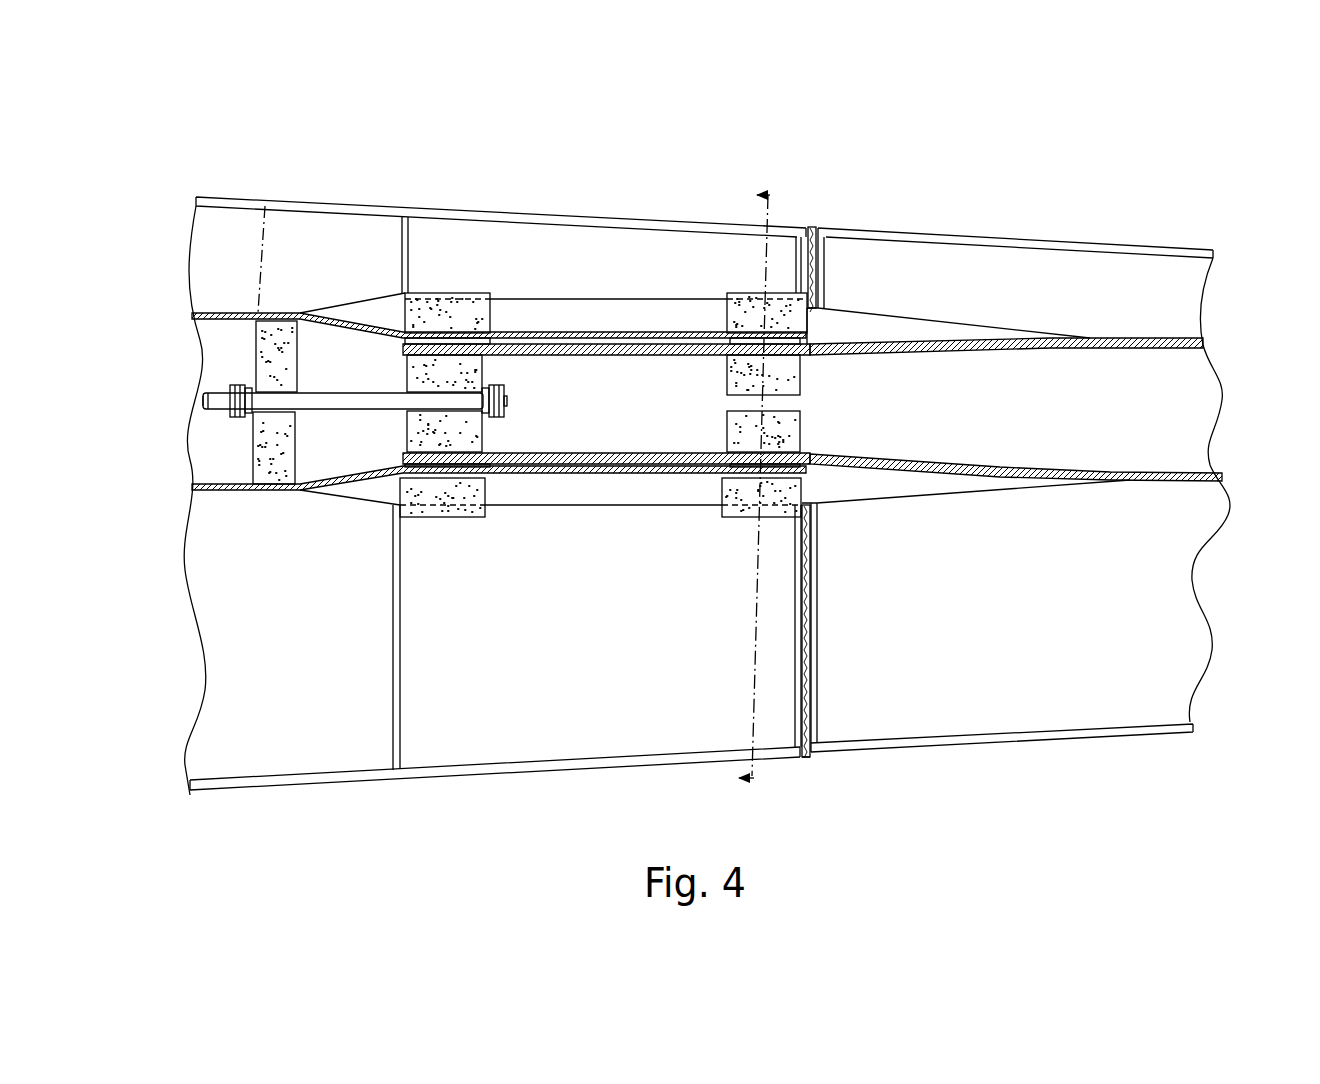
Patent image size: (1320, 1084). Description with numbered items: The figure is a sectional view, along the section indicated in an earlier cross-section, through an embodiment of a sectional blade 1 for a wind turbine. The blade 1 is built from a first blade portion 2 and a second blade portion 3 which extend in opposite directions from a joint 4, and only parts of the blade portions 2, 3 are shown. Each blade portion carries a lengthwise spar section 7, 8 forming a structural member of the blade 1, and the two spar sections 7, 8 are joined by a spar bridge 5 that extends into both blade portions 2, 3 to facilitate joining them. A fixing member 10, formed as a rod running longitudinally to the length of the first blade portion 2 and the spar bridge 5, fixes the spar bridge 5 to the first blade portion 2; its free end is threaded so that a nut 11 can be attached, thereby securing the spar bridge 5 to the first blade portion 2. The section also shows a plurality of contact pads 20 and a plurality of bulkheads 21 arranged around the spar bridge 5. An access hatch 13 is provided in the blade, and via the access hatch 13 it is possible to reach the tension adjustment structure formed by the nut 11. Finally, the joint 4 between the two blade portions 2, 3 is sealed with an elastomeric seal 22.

The sectional blade 1 is at (1172, 800).
The first blade portion 2 is at (530, 766).
The second blade portion 3 is at (1107, 737).
The joint 4 is at (801, 762).
The spar bridge 5 is at (597, 465).
The spar section 7 is at (540, 477).
The spar section 8 is at (1205, 345).
The fixing member 10 is at (345, 400).
The nut 11 is at (222, 403).
The access hatch 13 is at (233, 203).
The contact pads 20 is at (462, 338).
The bulkheads 21 is at (280, 470).
The elastomeric seal 22 is at (814, 232).